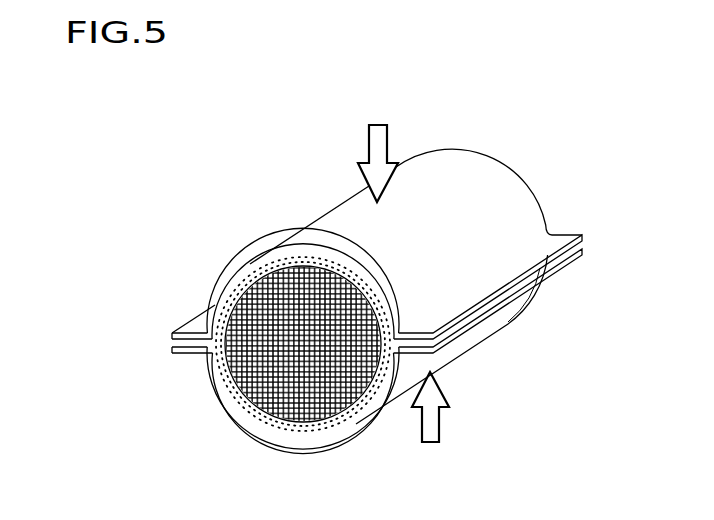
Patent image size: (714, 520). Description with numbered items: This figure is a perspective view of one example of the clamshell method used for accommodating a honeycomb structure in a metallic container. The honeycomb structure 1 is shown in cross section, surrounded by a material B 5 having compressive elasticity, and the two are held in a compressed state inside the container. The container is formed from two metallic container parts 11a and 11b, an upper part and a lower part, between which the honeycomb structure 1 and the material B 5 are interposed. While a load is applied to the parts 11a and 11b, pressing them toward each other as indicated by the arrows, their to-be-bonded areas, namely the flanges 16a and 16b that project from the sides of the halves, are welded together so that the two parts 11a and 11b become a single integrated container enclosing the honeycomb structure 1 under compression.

The honeycomb structure 1 is at (313, 417).
The material B having compressive elasticity 5 is at (280, 430).
The metallic container part 11a is at (333, 233).
The metallic container part 11b is at (217, 388).
The flange 16a is at (172, 338).
The flange 16b is at (470, 333).